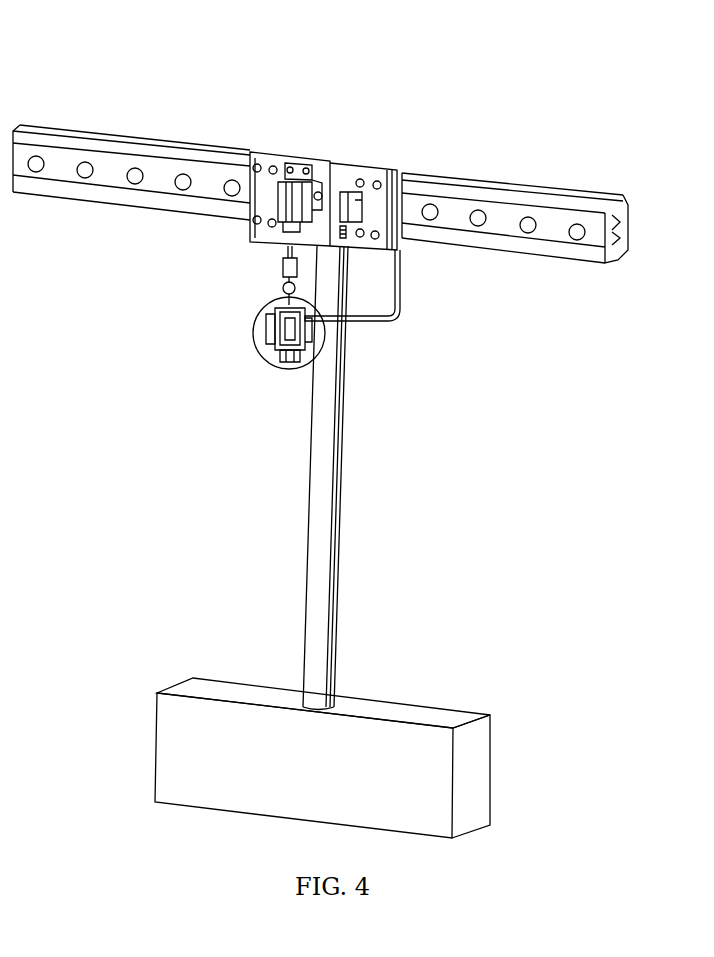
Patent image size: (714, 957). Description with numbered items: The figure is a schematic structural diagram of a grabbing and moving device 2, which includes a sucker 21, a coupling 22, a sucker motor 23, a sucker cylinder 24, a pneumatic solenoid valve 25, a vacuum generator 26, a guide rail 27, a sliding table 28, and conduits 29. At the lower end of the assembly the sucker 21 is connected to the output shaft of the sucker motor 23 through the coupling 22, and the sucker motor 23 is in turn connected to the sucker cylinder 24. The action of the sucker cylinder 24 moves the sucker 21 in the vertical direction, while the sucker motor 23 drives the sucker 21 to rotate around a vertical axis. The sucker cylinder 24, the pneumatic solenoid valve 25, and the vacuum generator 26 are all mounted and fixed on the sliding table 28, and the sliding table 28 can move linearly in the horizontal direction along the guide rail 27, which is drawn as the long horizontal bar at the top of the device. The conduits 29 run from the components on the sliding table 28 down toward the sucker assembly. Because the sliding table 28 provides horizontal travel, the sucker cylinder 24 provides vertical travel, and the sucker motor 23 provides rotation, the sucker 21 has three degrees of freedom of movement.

The grabbing and moving device 2 is at (327, 443).
The sucker 21 is at (275, 363).
The coupling 22 is at (285, 305).
The sucker motor 23 is at (282, 262).
The sucker cylinder 24 is at (283, 192).
The pneumatic solenoid valve 25 is at (323, 190).
The vacuum generator 26 is at (400, 178).
The guide rail 27 is at (455, 215).
The sliding table 28 is at (362, 240).
The conduits 29 is at (316, 323).